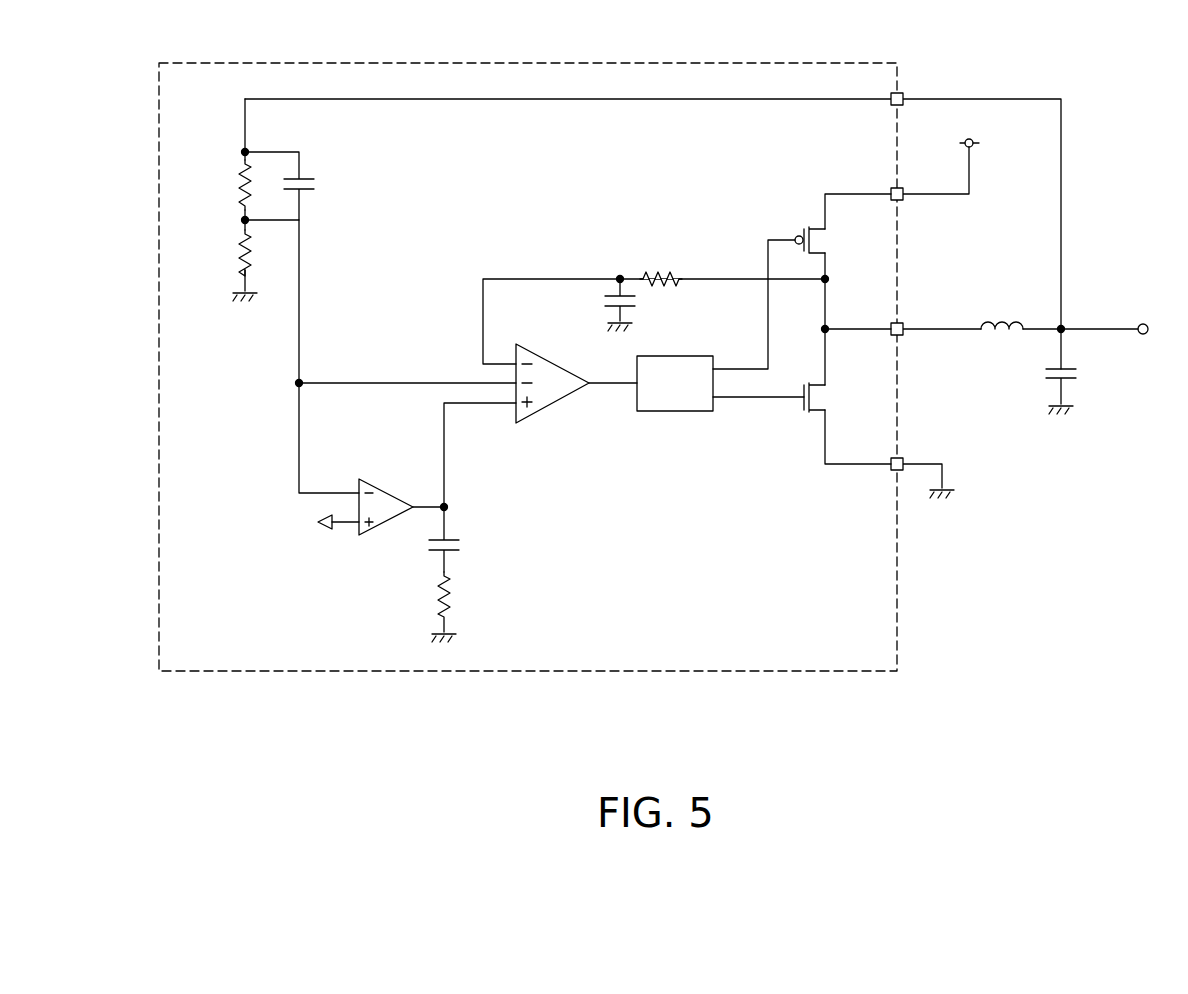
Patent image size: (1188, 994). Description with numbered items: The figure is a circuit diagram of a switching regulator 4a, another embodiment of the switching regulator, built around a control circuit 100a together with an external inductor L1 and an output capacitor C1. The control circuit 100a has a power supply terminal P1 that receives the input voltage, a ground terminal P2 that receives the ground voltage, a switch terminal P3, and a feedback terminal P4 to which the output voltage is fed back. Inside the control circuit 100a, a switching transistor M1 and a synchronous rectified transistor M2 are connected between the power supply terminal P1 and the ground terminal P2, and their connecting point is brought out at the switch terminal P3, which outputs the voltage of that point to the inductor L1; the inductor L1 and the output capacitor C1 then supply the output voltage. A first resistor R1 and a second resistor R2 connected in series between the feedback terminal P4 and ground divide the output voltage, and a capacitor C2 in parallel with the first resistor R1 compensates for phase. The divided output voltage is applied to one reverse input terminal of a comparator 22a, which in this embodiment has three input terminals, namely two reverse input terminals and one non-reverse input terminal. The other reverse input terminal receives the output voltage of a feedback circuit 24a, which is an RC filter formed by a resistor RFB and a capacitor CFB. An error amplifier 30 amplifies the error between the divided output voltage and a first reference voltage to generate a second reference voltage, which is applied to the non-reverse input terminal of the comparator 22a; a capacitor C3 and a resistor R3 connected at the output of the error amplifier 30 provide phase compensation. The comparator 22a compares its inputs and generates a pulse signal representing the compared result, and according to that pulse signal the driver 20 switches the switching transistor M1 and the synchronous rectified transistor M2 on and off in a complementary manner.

The DC-DC converter 4a is at (677, 765).
The control circuit 100a is at (547, 672).
The first resistor R1 is at (238, 196).
The second resistor R2 is at (238, 266).
The capacitor C2 is at (320, 188).
The error amplifier 30 is at (386, 533).
The compensation capacitor C3 is at (462, 546).
The compensation resistor R3 is at (456, 598).
The comparator 22a is at (562, 405).
The feedback circuit 24a is at (693, 231).
The resistor RFB is at (651, 271).
The capacitor CFB is at (608, 300).
The driver 20 is at (689, 412).
The switching transistor M1 is at (828, 240).
The synchronous rectified transistor M2 is at (828, 397).
The power supply terminal P1 is at (903, 190).
The ground terminal P2 is at (903, 460).
The switch terminal P3 is at (903, 333).
The feedback terminal P4 is at (903, 95).
The inductor L1 is at (1003, 319).
The output capacitor C1 is at (1080, 374).